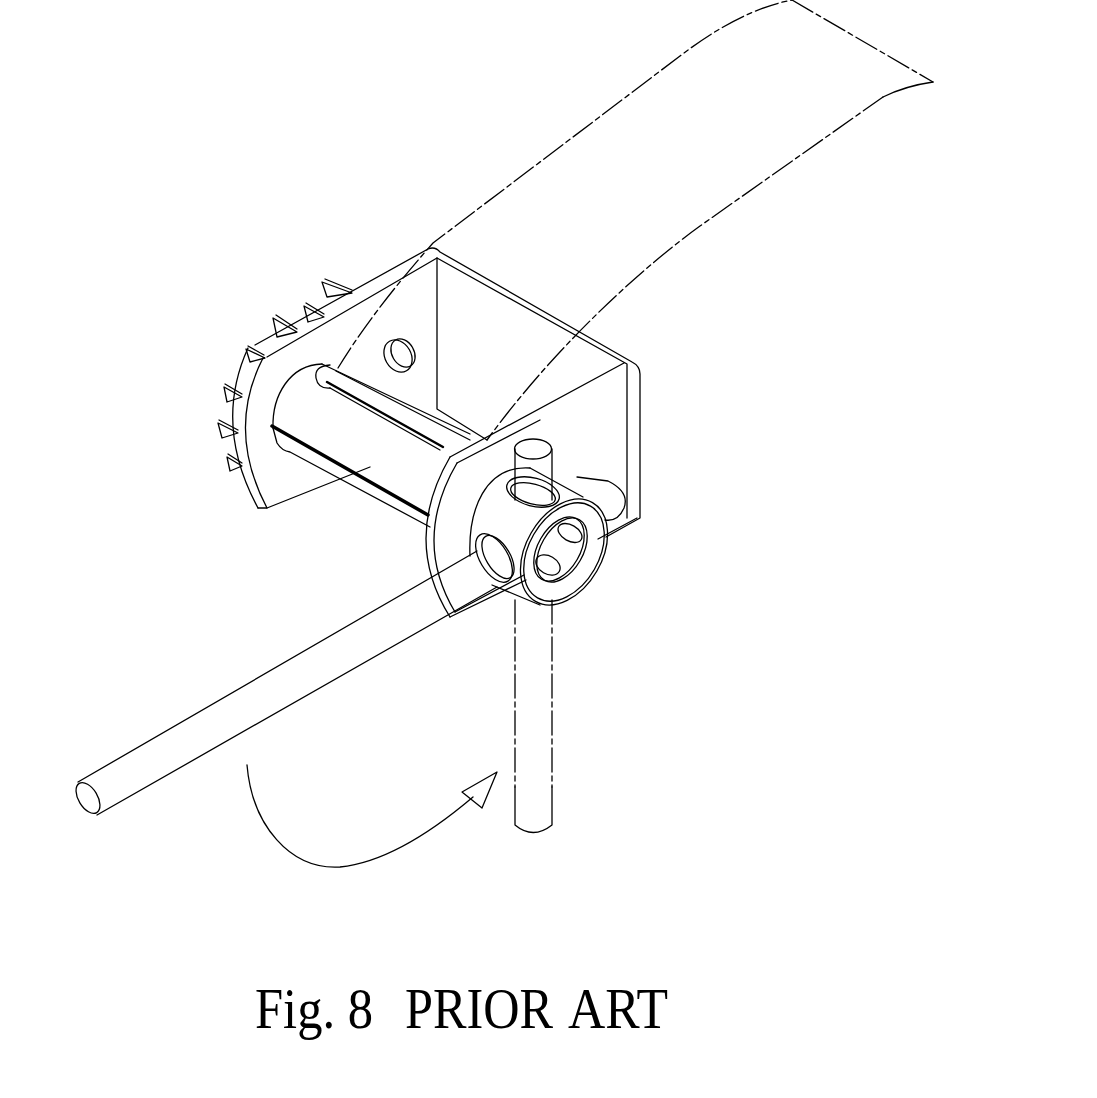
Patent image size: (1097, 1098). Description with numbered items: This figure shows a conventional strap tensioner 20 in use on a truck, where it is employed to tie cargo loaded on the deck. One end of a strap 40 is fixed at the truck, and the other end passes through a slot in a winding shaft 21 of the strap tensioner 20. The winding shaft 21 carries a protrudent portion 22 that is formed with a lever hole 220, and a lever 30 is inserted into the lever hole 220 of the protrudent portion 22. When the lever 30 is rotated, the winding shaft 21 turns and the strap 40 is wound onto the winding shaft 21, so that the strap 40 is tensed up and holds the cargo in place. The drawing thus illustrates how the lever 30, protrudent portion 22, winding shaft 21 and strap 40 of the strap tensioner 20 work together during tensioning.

The strap tensioner 20 is at (272, 302).
The winding shaft 21 is at (377, 465).
The protrudent portion 22 is at (497, 520).
The lever hole 220 is at (553, 472).
The lever 30 is at (175, 760).
The strap 40 is at (728, 188).